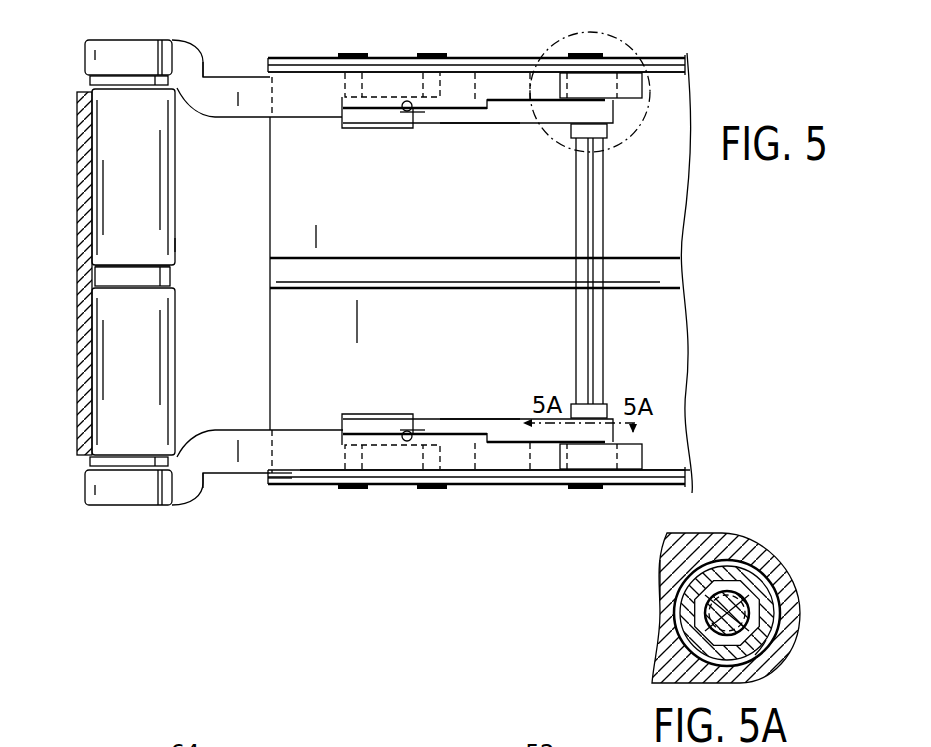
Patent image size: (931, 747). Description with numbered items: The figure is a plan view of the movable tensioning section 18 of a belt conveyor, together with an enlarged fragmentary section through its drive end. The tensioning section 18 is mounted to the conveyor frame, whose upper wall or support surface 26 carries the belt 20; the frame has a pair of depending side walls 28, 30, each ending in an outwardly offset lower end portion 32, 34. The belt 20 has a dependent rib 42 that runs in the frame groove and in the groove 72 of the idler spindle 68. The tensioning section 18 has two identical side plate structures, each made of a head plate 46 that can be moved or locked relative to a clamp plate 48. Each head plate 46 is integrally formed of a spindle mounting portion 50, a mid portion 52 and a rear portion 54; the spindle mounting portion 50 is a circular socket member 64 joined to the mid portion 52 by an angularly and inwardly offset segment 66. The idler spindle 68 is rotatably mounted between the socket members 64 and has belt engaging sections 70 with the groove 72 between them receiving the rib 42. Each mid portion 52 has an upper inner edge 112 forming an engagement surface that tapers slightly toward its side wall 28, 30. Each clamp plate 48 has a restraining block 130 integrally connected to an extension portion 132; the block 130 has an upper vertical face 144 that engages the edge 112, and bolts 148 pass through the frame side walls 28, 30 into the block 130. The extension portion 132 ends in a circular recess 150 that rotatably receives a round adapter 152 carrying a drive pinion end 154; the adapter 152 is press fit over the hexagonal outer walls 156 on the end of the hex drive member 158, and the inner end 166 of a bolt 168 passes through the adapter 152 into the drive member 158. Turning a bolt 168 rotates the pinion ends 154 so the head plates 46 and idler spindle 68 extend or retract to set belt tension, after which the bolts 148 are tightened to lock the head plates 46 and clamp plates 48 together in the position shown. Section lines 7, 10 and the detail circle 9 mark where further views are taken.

In FIG. 5, the tensioning section 18 is at (108, 32).
In FIG. 5, the belt 20 is at (78, 188).
In FIG. 5, the upper wall 26 is at (421, 226).
In FIG. 5, the side wall 28 is at (270, 475).
In FIG. 5, the side wall 30 is at (268, 73).
In FIG. 5, the lower end portion 32 is at (268, 480).
In FIG. 5, the lower end portion 34 is at (270, 57).
In FIG. 5, the dependent rib 42 is at (97, 268).
In FIG. 5, the head plate 46 is at (299, 86).
In FIG. 5, the clamp plate 48 is at (507, 135).
In FIG. 5A, the clamp plate 48 is at (642, 560).
In FIG. 5, the spindle mounting portion 50 is at (204, 48).
In FIG. 5, the mid portion 52 is at (378, 85).
In FIG. 5, the rear portion 54 is at (507, 80).
In FIG. 5, the circular socket member 64 is at (120, 48).
In FIG. 5, the offset segment 66 is at (187, 78).
In FIG. 5, the idler spindle 68 is at (180, 243).
In FIG. 5, the belt engaging section 70 is at (152, 186).
In FIG. 5, the groove 72 is at (162, 270).
In FIG. 5, the upper inner edge 112 is at (412, 117).
In FIG. 5, the restraining block 130 is at (358, 130).
In FIG. 5, the extension portion 132 is at (526, 130).
In FIG. 5A, the extension portion 132 is at (740, 552).
In FIG. 5, the upper vertical face 144 is at (378, 110).
In FIG. 5, the bolt 148 is at (356, 53).
In FIG. 5A, the circular recess 150 is at (778, 630).
In FIG. 5, the round adapter 152 is at (613, 110).
In FIG. 5A, the round adapter 152 is at (757, 655).
In FIG. 5, the drive pinion end 154 is at (642, 103).
In FIG. 5A, the hexagonally shaped outer wall 156 is at (678, 610).
In FIG. 5, the drive member 158 is at (600, 217).
In FIG. 5A, the drive member 158 is at (760, 575).
In FIG. 5A, the inner end 166 is at (753, 605).
In FIG. 5, the bolt 168 is at (600, 52).
In FIG. 5, the section line 7 is at (72, 345).
In FIG. 5, the detail circle 9 is at (652, 100).
In FIG. 5, the section line 10 is at (433, 413).